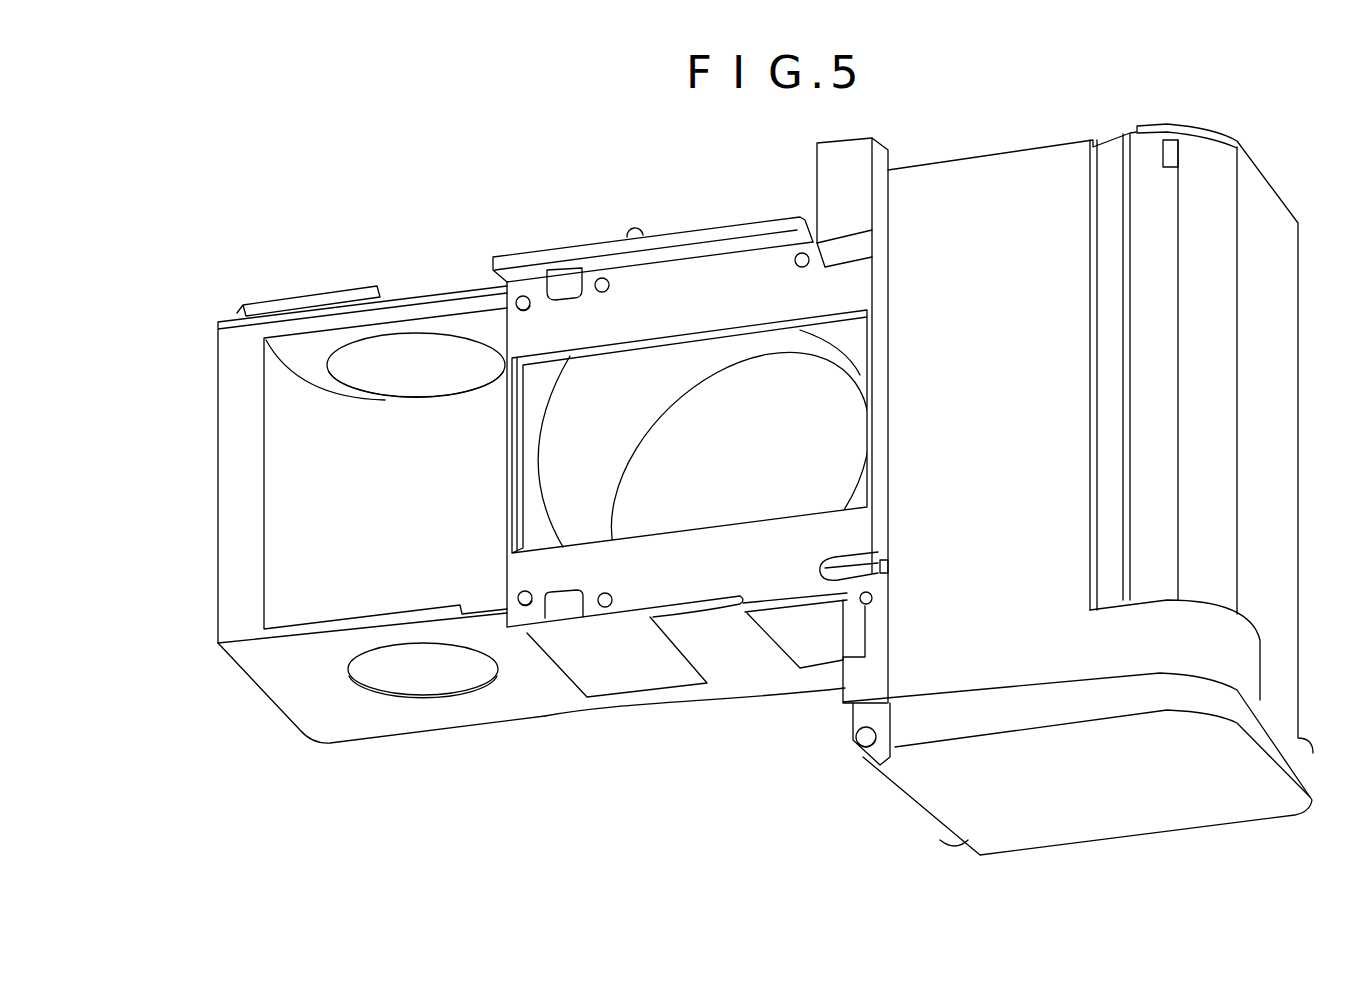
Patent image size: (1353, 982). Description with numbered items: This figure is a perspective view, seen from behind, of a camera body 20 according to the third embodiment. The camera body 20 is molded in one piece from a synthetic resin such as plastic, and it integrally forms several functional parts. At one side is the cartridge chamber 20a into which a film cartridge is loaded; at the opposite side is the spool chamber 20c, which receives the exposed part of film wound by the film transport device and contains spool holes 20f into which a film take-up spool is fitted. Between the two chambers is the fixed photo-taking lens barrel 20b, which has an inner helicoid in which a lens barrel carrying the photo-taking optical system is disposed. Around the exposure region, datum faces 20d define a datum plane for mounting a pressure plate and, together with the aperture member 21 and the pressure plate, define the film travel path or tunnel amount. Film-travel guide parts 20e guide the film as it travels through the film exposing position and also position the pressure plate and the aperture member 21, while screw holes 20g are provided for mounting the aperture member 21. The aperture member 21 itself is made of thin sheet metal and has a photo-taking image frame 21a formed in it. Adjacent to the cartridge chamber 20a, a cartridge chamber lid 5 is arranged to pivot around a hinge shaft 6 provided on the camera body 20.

The cartridge chamber lid 5 is at (1280, 820).
The hinge shaft 6 is at (862, 740).
The camera body 20 is at (700, 232).
The cartridge chamber 20a is at (1275, 195).
The fixed photo-taking lens barrel 20b is at (745, 683).
The spool chamber 20c is at (278, 426).
The datum faces 20d is at (562, 285).
The film-travel guide parts 20e is at (522, 296).
The spool holes 20f is at (417, 352).
The screw holes 20g is at (601, 282).
The aperture member 21 is at (686, 588).
The photo-taking image frame 21a is at (795, 325).